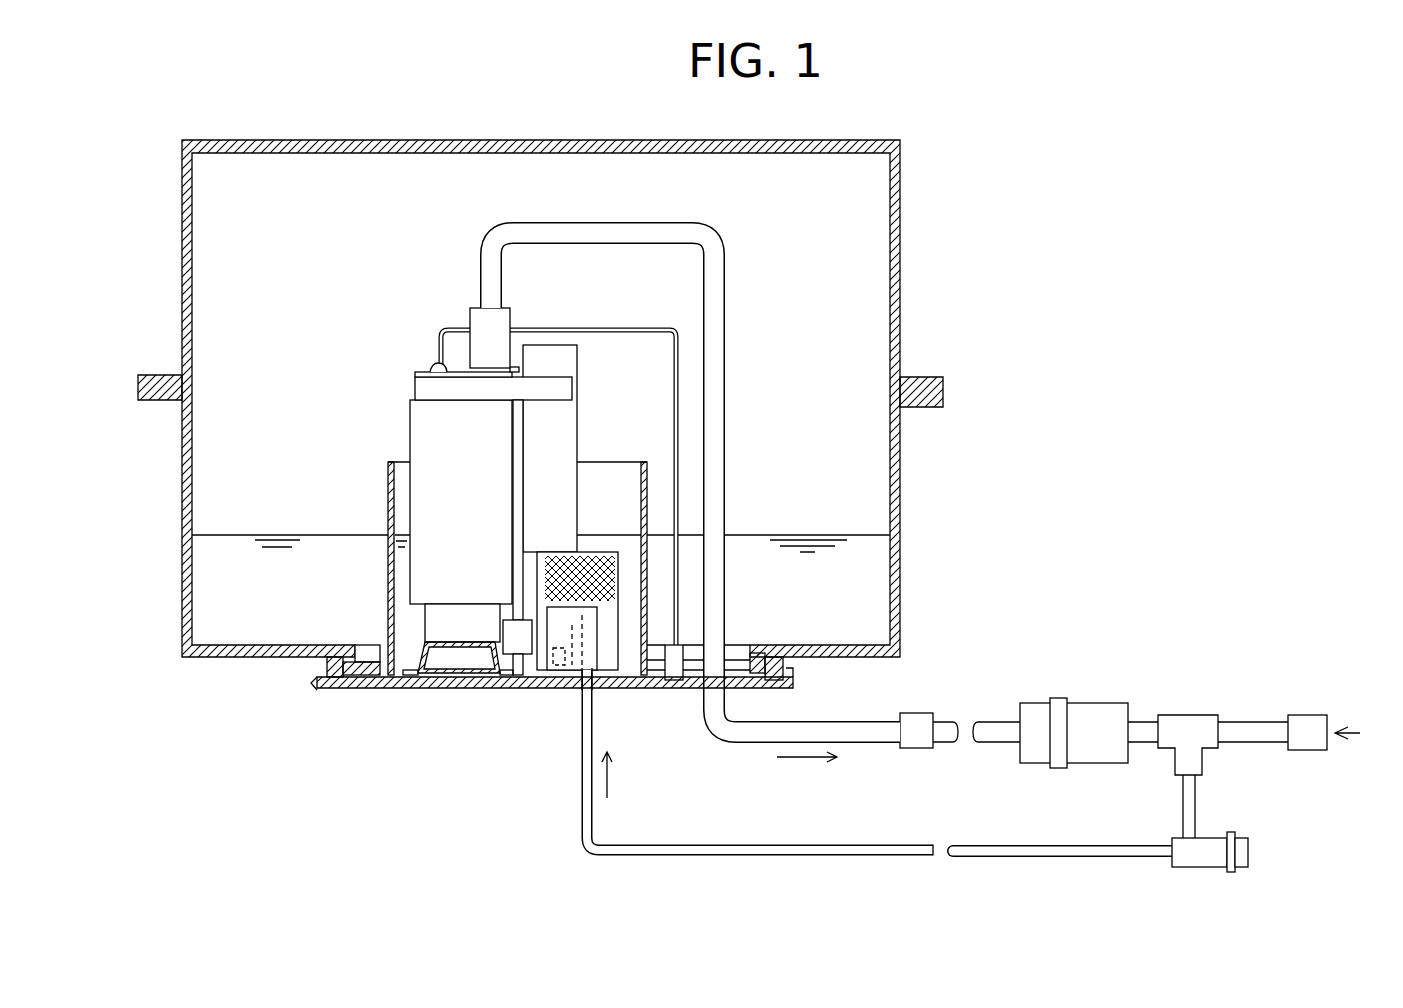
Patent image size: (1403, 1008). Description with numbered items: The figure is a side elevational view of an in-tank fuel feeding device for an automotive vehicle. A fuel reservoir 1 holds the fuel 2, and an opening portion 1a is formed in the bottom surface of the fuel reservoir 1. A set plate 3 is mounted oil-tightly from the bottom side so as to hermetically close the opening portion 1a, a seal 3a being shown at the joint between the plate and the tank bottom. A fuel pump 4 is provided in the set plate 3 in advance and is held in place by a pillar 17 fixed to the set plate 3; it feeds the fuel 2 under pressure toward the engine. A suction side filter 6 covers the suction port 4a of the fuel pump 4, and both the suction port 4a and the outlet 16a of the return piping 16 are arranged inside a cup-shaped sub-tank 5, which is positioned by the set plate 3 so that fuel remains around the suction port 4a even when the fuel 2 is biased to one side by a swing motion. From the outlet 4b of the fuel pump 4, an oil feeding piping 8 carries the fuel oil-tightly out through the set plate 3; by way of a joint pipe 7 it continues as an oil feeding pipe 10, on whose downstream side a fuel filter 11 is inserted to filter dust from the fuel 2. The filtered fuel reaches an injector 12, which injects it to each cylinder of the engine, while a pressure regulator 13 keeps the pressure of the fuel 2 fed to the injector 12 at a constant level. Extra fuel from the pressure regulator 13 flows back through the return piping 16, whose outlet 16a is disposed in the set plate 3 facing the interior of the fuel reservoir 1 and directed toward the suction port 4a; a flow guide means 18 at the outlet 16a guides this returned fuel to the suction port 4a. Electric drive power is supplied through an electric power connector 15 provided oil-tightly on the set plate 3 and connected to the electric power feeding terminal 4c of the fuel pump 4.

The fuel reservoir 1 is at (900, 220).
The opening portion 1a is at (745, 653).
The fuel 2 is at (810, 535).
The set plate 3 is at (415, 688).
The seal 3a is at (380, 643).
The fuel pump 4 is at (437, 437).
The suction port 4a is at (517, 645).
The outlet 4b is at (513, 368).
The electric power feeding terminal 4c is at (432, 365).
The sub-tank 5 is at (388, 493).
The suction side filter 6 is at (600, 548).
The joint pipe 7 is at (470, 318).
The oil feeding piping 8 is at (520, 224).
The oil feeding pipe 10 is at (947, 738).
The fuel filter 11 is at (1093, 723).
The injector 12 is at (1307, 727).
The pressure regulator 13 is at (1197, 867).
The electric power connector 15 is at (677, 690).
The return piping 16 is at (788, 858).
The outlet of the return piping 16a is at (590, 662).
The pillar 17 is at (560, 347).
The flow guide means 18 is at (588, 620).